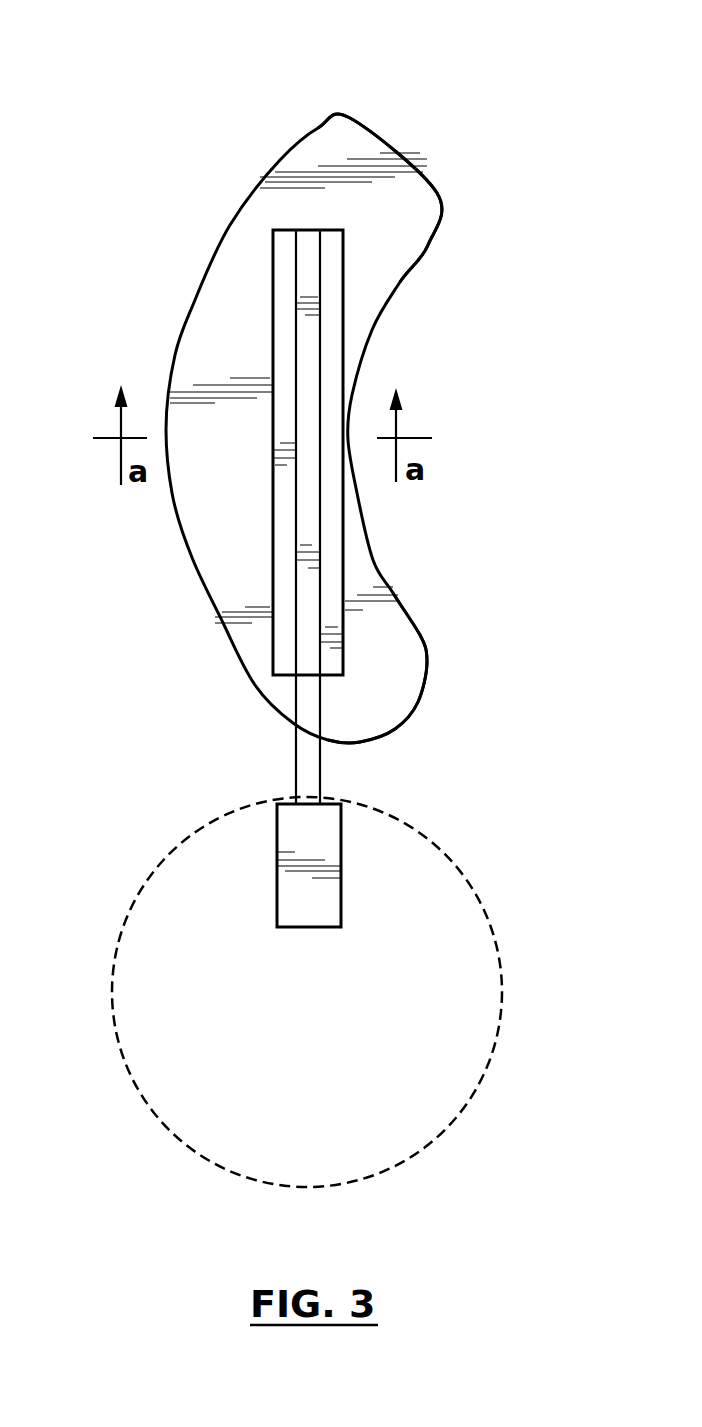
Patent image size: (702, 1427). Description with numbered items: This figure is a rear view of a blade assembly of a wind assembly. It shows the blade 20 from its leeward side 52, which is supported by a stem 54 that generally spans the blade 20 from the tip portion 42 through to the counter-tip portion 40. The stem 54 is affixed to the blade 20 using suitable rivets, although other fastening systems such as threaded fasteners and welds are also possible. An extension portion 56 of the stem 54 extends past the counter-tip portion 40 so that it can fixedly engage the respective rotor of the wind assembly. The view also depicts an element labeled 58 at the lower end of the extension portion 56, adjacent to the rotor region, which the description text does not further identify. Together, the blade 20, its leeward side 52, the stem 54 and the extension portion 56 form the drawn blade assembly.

The blade 20 is at (215, 280).
The tip portion 42 is at (383, 128).
The leeward side 52 is at (398, 245).
The stem 54 is at (308, 512).
The extension portion 56 is at (305, 750).
The mounting block 58 is at (323, 842).
The counter-tip portion 40 is at (390, 707).